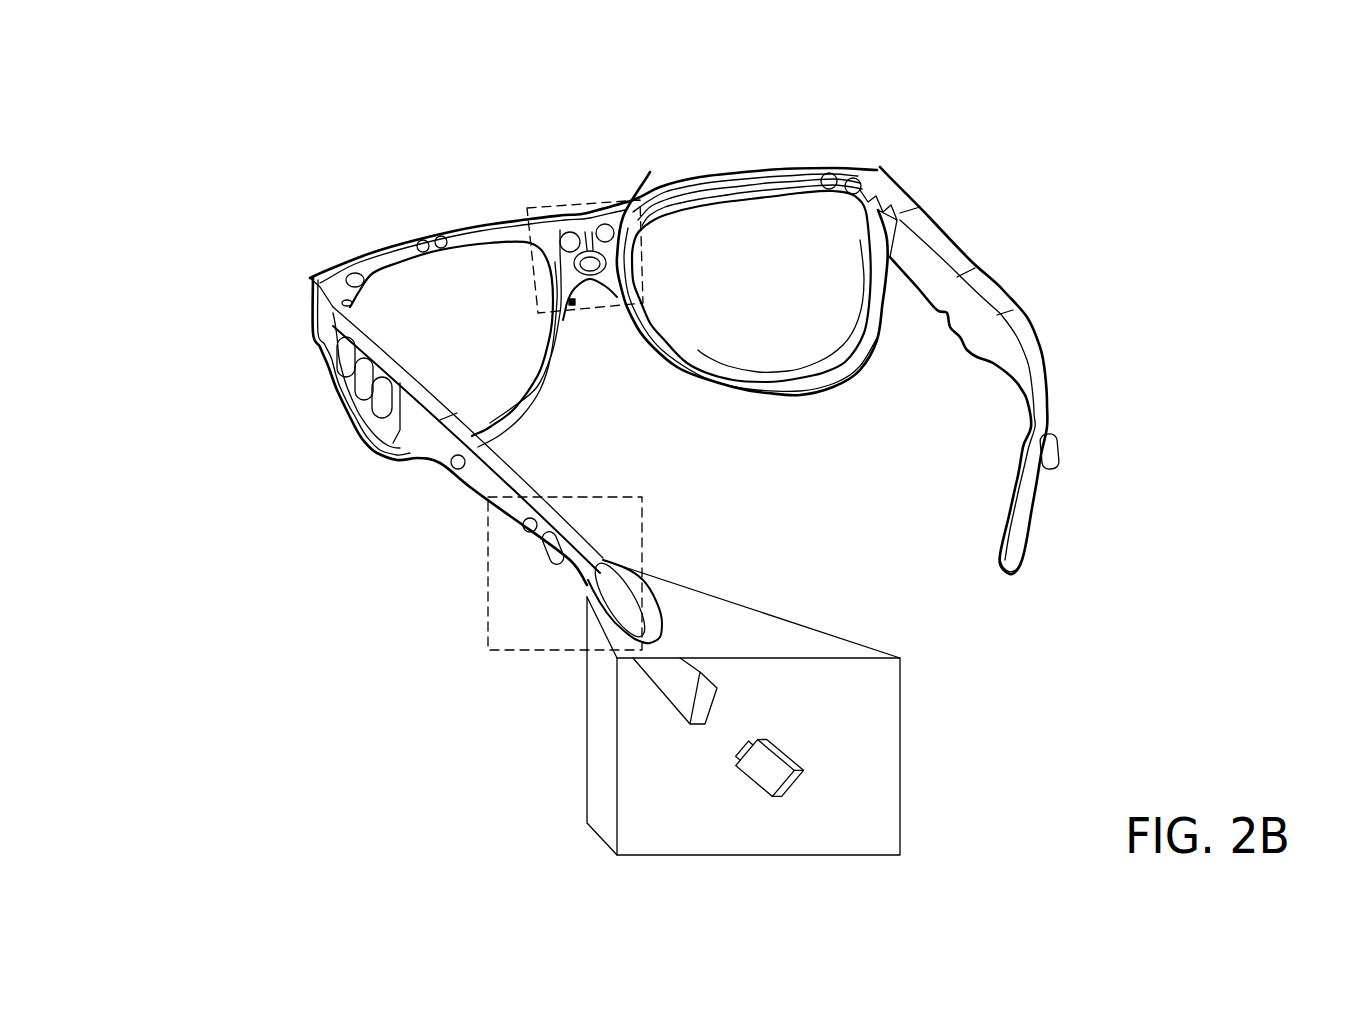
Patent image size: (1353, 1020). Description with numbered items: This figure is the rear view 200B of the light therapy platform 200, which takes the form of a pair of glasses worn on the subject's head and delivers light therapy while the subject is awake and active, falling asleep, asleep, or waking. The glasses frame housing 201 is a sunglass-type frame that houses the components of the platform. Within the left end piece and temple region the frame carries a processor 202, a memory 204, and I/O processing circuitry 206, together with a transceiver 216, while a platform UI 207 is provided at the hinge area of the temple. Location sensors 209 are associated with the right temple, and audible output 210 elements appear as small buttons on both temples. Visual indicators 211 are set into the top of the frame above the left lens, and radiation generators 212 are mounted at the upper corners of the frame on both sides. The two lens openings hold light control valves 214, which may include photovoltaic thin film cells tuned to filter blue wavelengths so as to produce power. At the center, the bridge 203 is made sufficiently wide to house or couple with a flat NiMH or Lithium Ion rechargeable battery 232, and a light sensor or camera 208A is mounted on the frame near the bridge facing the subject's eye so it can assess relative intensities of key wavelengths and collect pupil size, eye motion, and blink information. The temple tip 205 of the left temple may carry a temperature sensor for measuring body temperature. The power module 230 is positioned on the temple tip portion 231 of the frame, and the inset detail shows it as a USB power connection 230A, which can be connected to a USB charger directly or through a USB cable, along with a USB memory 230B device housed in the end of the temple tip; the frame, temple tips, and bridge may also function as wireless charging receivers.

The light therapy platform 200 is at (190, 162).
The rear view 200B is at (352, 688).
The glasses frame housing 201 is at (880, 172).
The processor 202 is at (338, 364).
The bridge 203 is at (590, 200).
The memory 204 is at (363, 390).
The temple tip 205 is at (505, 655).
The I/O processing circuitry 206 is at (378, 410).
The platform UI 207 is at (456, 470).
The light sensor or camera 208A is at (565, 232).
The location sensors 209 is at (985, 288).
The audible output 210 is at (522, 528).
The visual indicators 211 is at (440, 235).
The radiation generators 212 is at (341, 256).
The light control valves 214 is at (730, 363).
The transceiver 216 is at (380, 453).
The power module 230 is at (560, 537).
The USB power connection 230A is at (722, 698).
The USB memory 230B is at (797, 795).
The temple tip portion 231 is at (1003, 503).
The rechargeable battery 232 is at (589, 268).